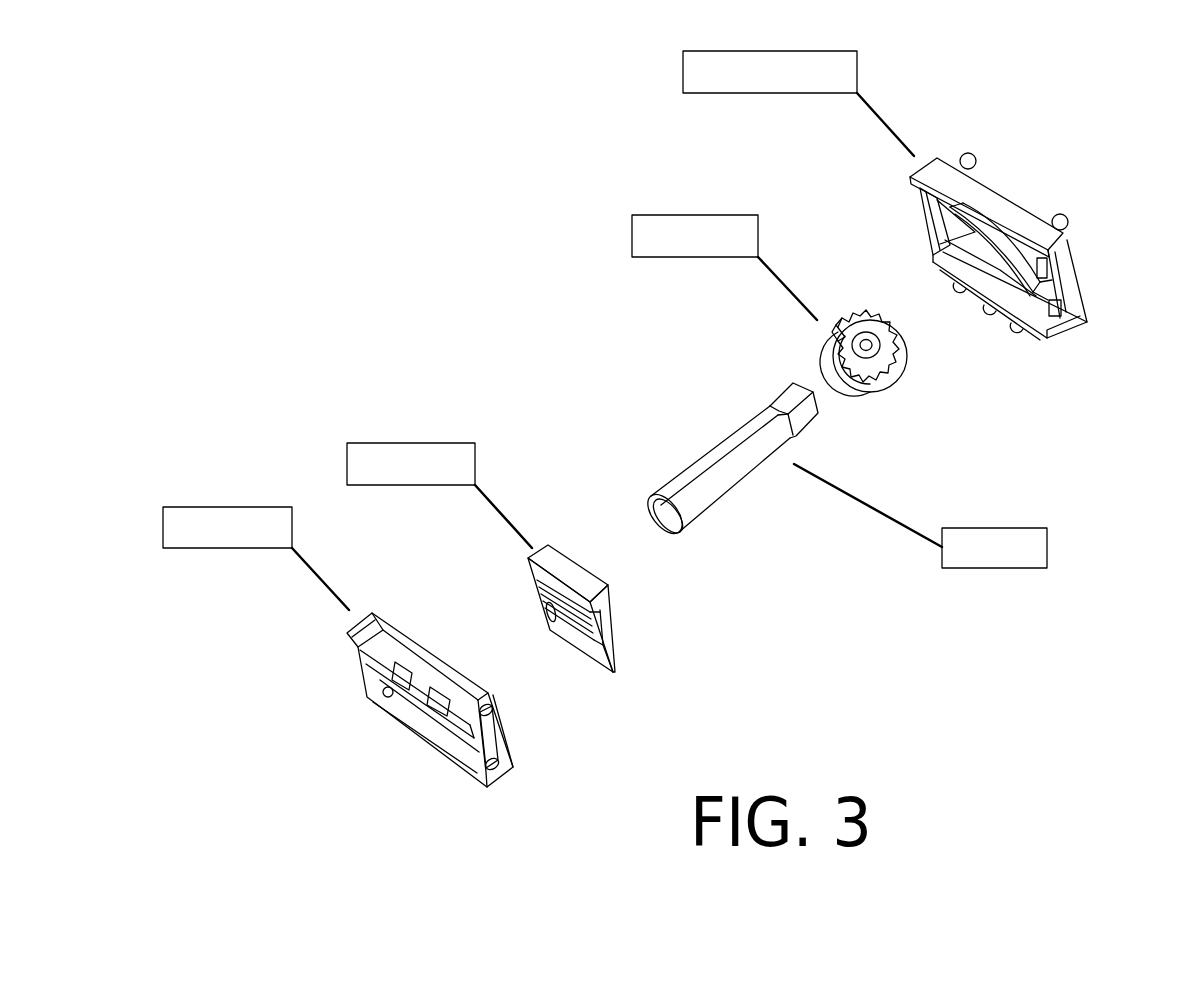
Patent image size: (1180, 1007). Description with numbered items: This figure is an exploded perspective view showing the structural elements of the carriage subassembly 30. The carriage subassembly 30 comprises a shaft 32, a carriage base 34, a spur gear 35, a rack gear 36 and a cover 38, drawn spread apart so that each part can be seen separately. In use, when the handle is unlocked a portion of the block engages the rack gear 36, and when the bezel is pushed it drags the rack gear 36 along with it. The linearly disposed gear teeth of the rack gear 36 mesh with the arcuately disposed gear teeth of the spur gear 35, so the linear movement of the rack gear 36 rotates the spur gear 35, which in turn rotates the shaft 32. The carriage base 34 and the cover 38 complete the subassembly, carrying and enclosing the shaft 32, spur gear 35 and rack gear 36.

The carriage subassembly 30 is at (474, 207).
The shaft 32 is at (727, 488).
The carriage base 34 is at (1070, 260).
The spur gear 35 is at (893, 387).
The rack gear 36 is at (617, 640).
The cover 38 is at (510, 740).